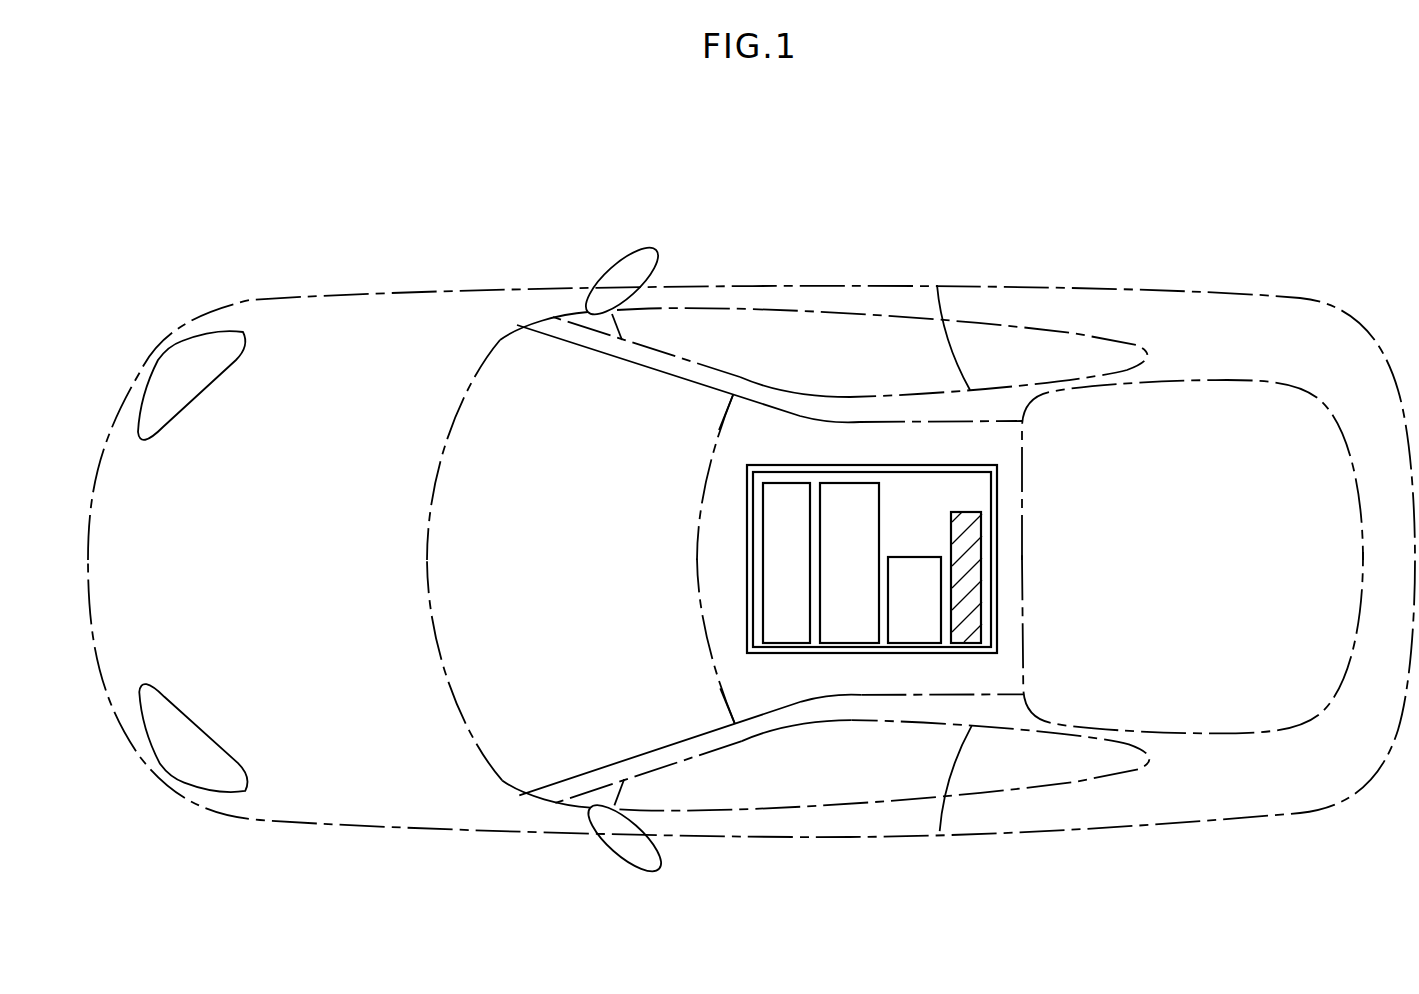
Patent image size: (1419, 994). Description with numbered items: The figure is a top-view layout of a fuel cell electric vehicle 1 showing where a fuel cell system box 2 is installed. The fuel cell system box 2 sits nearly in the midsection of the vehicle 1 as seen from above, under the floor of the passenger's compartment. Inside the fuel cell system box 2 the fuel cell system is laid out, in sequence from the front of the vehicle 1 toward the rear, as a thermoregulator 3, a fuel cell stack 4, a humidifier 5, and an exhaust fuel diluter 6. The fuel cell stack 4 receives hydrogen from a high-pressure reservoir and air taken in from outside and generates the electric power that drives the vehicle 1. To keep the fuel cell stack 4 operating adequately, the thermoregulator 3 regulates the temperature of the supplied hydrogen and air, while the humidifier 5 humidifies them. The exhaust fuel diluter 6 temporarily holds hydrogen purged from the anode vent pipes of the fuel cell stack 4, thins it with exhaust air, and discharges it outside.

The fuel cell electric vehicle 1 is at (907, 220).
The fuel cell system box 2 is at (867, 452).
The thermoregulator 3 is at (793, 617).
The fuel cell stack 4 is at (857, 617).
The humidifier 5 is at (921, 617).
The exhaust fuel diluter 6 is at (967, 525).